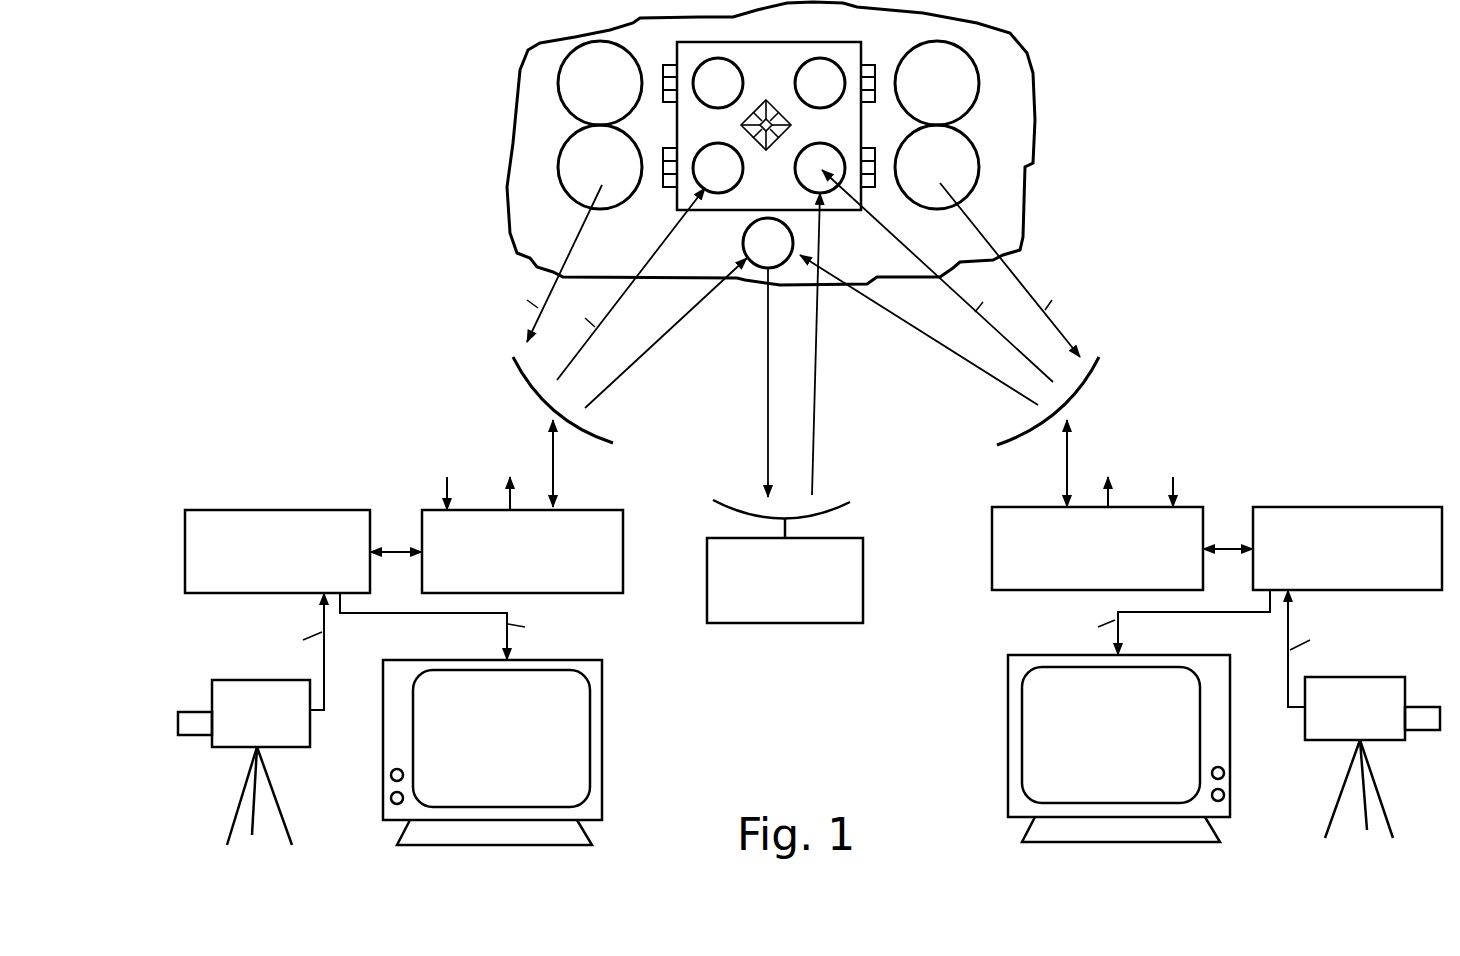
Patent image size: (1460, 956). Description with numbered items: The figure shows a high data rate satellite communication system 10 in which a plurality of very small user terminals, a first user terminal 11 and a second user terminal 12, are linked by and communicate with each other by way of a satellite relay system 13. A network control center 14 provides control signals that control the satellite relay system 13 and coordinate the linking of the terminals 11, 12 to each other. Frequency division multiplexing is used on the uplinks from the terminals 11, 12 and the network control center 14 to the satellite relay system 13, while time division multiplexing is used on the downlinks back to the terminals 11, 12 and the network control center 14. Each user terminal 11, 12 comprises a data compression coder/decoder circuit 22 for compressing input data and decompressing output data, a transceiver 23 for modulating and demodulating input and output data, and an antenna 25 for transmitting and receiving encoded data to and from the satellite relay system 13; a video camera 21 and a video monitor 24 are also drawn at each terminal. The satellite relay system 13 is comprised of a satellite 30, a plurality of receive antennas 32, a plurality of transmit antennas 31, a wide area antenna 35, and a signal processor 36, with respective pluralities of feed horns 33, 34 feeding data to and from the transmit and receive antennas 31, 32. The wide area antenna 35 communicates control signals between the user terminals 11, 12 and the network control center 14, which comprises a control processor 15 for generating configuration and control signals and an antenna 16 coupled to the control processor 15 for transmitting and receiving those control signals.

The high data rate satellite communication system 10 is at (250, 90).
The first user terminal 11 is at (258, 393).
The second user terminal 12 is at (1312, 337).
The satellite relay system 13 is at (1033, 117).
The network control center 14 is at (845, 665).
The control processor 15 is at (797, 623).
The antenna 16 is at (850, 503).
The video camera 21 is at (310, 747).
The data compression coder/decoder (CODEC) circuit 22 is at (295, 508).
The transceiver 23 is at (603, 508).
The video monitor 24 is at (602, 757).
The antenna 25 is at (540, 402).
The satellite 30 is at (558, 236).
The transmit antennas 31 is at (565, 103).
The receive antennas 32 is at (793, 74).
The feed horns 33 is at (667, 63).
The feed horns 34 is at (763, 148).
The wide area antenna 35 is at (743, 245).
The signal processor 36 is at (800, 42).